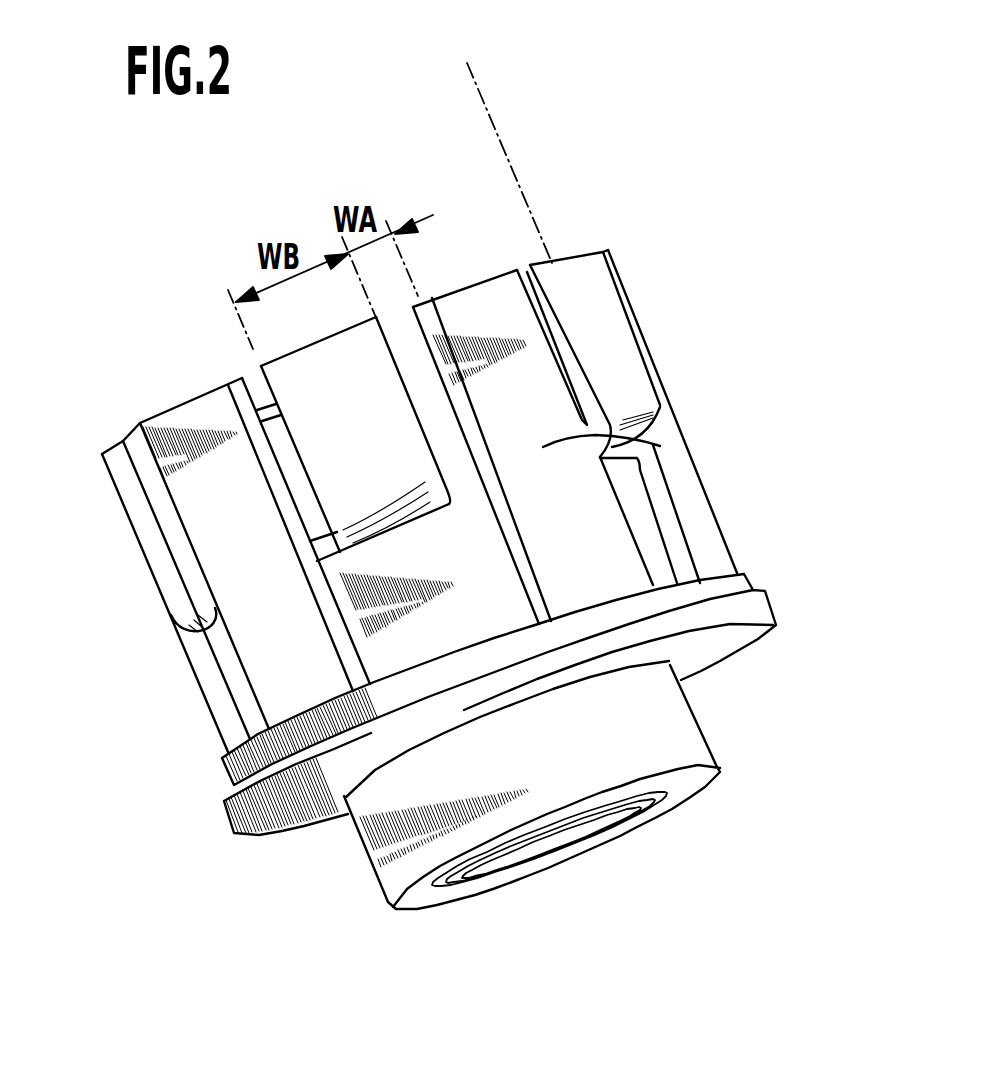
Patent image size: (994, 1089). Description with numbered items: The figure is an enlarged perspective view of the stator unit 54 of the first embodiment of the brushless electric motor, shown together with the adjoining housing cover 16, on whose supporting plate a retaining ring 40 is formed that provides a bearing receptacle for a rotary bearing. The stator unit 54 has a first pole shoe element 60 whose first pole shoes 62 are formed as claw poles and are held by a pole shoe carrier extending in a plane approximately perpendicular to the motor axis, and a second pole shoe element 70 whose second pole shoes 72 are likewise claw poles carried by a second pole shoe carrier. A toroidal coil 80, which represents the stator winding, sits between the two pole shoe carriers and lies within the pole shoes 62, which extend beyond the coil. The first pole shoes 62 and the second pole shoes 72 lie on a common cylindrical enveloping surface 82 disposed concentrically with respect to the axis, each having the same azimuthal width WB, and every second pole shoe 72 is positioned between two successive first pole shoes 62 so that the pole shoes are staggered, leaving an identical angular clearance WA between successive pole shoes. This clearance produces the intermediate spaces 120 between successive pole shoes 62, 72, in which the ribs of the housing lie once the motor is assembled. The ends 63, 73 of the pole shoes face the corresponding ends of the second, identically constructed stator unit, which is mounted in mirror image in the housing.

The housing cover 16 is at (745, 671).
The retaining ring 40 is at (688, 741).
The stator unit 54 is at (150, 685).
The first pole shoe element 60 is at (626, 292).
The first pole shoes 62 is at (335, 415).
The end of pole shoe 63 is at (293, 352).
The second pole shoe element 70 is at (629, 516).
The second pole shoes 72 is at (660, 446).
The end of pole shoe 73 is at (187, 397).
The toroidal coil 80 is at (355, 642).
The cylindrical enveloping surface 82 is at (486, 104).
The intermediate spaces 120 is at (450, 447).